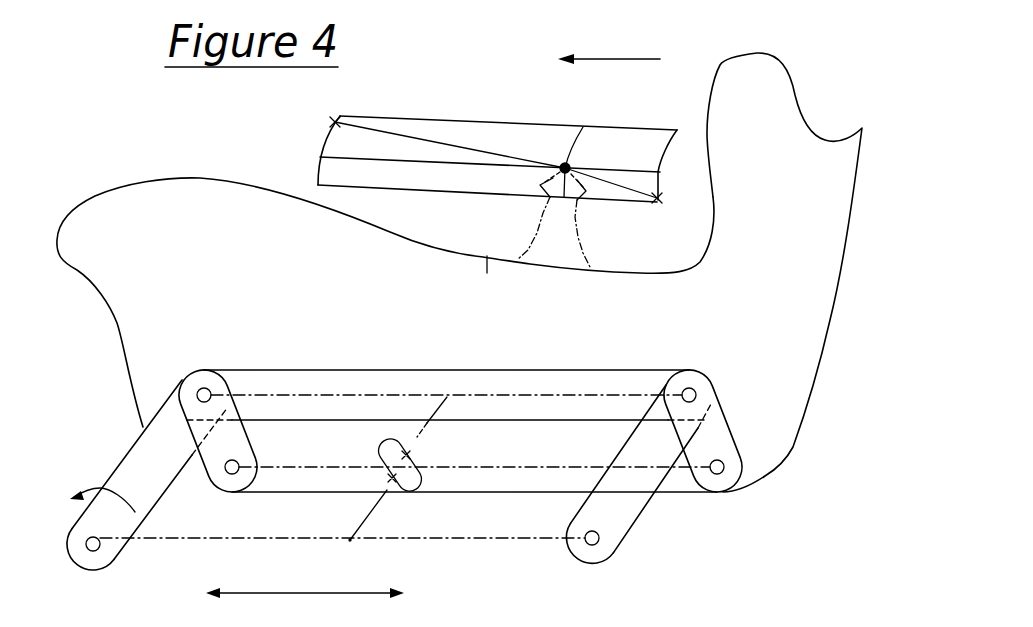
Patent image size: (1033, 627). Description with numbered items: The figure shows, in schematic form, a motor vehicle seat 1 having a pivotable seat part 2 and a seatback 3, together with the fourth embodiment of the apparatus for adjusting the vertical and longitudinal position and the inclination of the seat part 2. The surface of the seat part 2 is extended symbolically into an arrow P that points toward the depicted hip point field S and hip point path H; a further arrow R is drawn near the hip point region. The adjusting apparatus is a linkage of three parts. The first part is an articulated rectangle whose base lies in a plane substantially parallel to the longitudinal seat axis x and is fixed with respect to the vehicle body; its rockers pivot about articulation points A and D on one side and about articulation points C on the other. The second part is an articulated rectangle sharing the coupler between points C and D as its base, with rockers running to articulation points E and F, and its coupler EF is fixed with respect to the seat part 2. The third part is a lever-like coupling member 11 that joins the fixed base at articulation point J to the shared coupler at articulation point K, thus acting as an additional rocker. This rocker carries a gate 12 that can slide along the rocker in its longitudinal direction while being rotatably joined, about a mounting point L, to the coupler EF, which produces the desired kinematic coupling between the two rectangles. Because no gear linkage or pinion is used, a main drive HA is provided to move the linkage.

The motor vehicle seat 1 is at (459, 262).
The pivotable seat part 2 is at (92, 224).
The seatback 3 is at (780, 108).
The coupling member 11 is at (375, 508).
The gate 12 is at (410, 470).
The hip point path H is at (415, 133).
The hip point field S is at (633, 140).
The arrow P is at (586, 193).
The direction of movement arrow R is at (622, 59).
The articulation point A is at (87, 552).
The articulation point D is at (208, 390).
The articulation point E is at (227, 478).
The articulation point C is at (692, 391).
The articulation point F is at (708, 489).
The articulation point K is at (447, 397).
The mounting point L is at (395, 452).
The articulation point J is at (350, 540).
The main drive HA is at (99, 492).
The longitudinal seat axis x is at (306, 602).